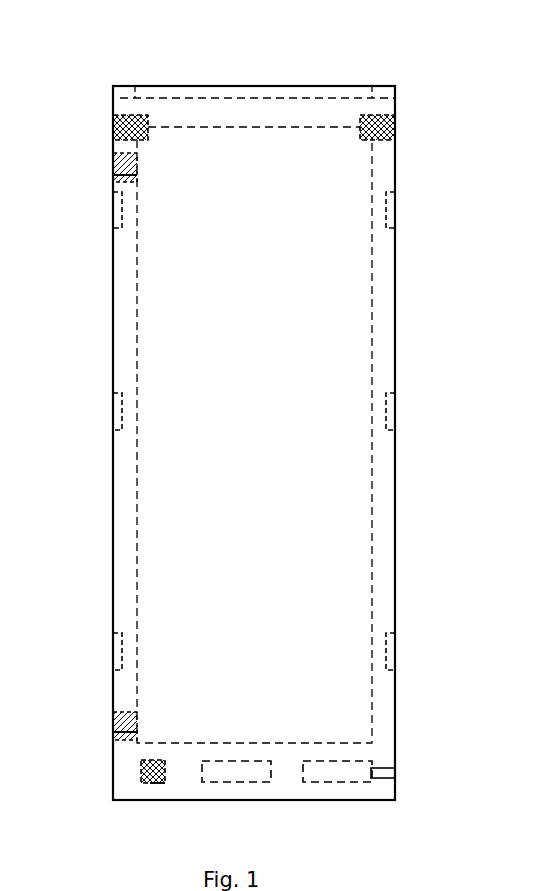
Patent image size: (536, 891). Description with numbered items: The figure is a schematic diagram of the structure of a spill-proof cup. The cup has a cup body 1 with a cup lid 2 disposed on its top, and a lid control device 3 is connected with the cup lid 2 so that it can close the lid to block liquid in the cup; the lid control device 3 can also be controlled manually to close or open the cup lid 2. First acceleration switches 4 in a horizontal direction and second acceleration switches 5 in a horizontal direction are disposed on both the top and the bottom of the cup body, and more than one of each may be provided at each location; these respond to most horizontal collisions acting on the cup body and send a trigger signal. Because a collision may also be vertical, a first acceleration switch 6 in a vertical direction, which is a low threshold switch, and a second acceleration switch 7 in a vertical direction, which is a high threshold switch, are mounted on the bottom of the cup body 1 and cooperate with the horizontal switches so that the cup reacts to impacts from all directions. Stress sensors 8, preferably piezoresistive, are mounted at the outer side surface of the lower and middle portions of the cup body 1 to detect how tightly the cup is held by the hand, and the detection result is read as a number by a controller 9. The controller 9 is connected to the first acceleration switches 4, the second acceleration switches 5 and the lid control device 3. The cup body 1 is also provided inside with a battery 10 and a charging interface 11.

The cup body 1 is at (113, 86).
The cup lid 2 is at (253, 112).
The lid control device 3 is at (113, 115).
The first acceleration switch in a horizontal direction 4 is at (118, 157).
The second acceleration switch in a horizontal direction 5 is at (113, 175).
The first acceleration switch in a vertical direction 6 is at (141, 773).
The second acceleration switch in a vertical direction 7 is at (158, 783).
The stress sensor 8 is at (113, 212).
The controller 9 is at (237, 772).
The battery 10 is at (338, 772).
The charging interface 11 is at (390, 772).